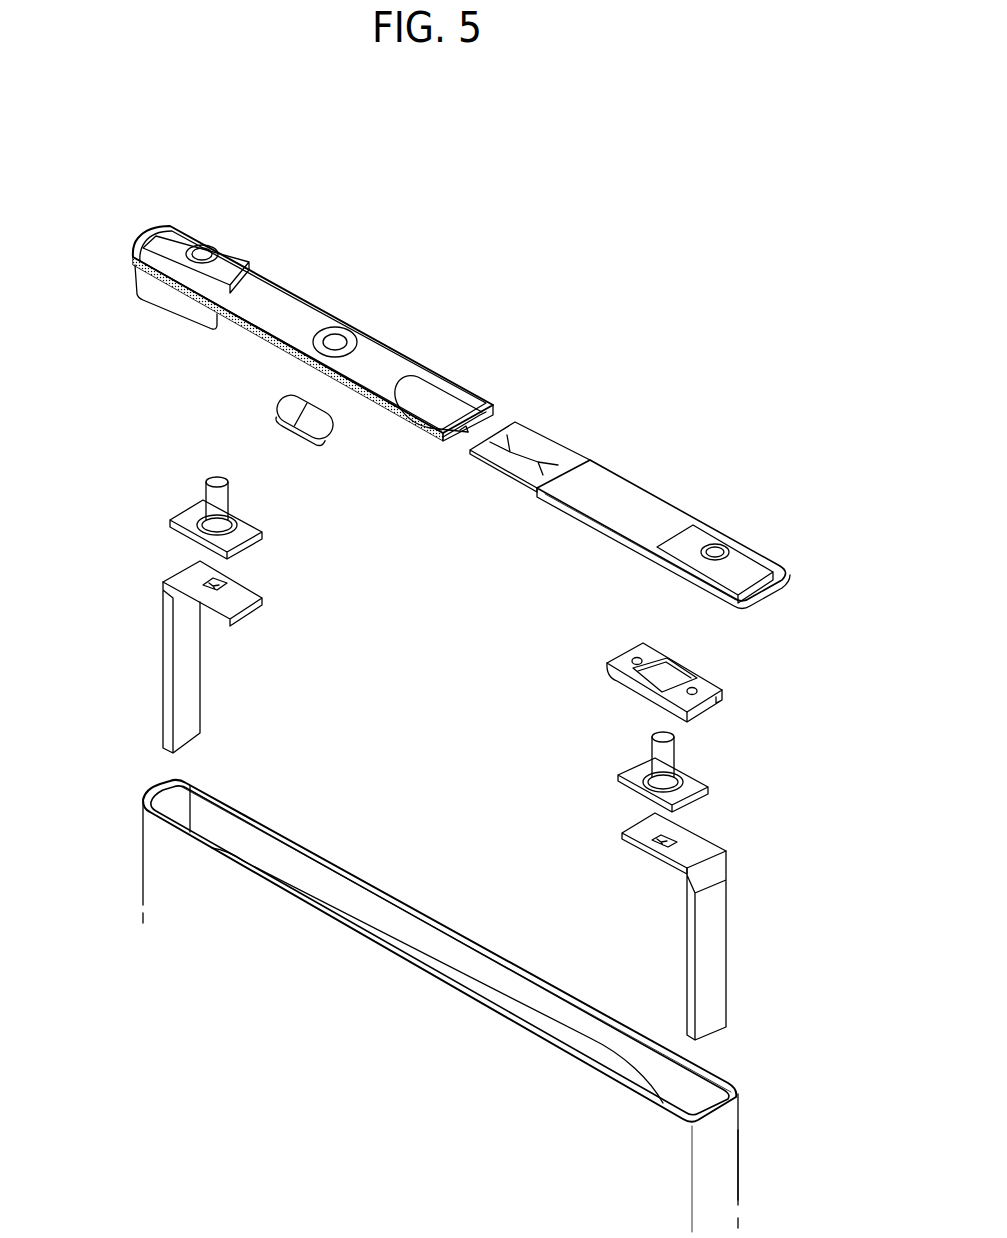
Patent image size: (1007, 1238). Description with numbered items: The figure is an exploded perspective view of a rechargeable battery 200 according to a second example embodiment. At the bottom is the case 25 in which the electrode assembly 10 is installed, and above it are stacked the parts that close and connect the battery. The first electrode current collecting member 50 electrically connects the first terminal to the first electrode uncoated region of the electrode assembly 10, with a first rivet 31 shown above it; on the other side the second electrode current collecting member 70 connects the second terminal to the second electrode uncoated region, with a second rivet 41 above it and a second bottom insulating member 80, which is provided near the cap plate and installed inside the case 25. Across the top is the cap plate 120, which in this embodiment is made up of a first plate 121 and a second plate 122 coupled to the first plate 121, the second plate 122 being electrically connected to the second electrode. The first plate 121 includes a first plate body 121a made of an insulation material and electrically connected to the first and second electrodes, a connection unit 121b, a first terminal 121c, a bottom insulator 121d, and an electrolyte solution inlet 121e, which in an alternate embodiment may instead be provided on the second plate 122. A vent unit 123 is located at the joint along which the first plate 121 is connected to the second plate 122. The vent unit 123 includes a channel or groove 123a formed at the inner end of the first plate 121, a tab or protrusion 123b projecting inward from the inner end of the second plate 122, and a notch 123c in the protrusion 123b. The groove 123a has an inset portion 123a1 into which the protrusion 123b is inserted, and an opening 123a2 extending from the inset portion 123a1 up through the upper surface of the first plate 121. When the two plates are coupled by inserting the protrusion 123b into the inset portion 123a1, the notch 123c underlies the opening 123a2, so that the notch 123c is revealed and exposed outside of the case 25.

The rechargeable battery 200 is at (461, 127).
The electrode assembly 10 is at (460, 968).
The case 25 is at (718, 1157).
The first rivet 31 is at (185, 517).
The second rivet 41 is at (700, 783).
The first electrode current collecting member 50 is at (162, 650).
The second electrode current collecting member 70 is at (728, 938).
The second bottom insulating member 80 is at (726, 695).
The cap plate 120 is at (493, 367).
The first plate 121 is at (735, 235).
The first plate body 121a is at (274, 298).
The connection unit 121b is at (143, 248).
The first terminal 121c is at (181, 238).
The bottom insulator 121d is at (172, 297).
The electrolyte solution inlet 121e is at (345, 338).
The second plate 122 is at (658, 510).
The vent unit 123 is at (587, 155).
The groove 123a is at (735, 150).
The inset portion 123a1 is at (463, 425).
The opening 123a2 is at (425, 398).
The protrusion 123b is at (525, 442).
The notch 123c is at (537, 465).